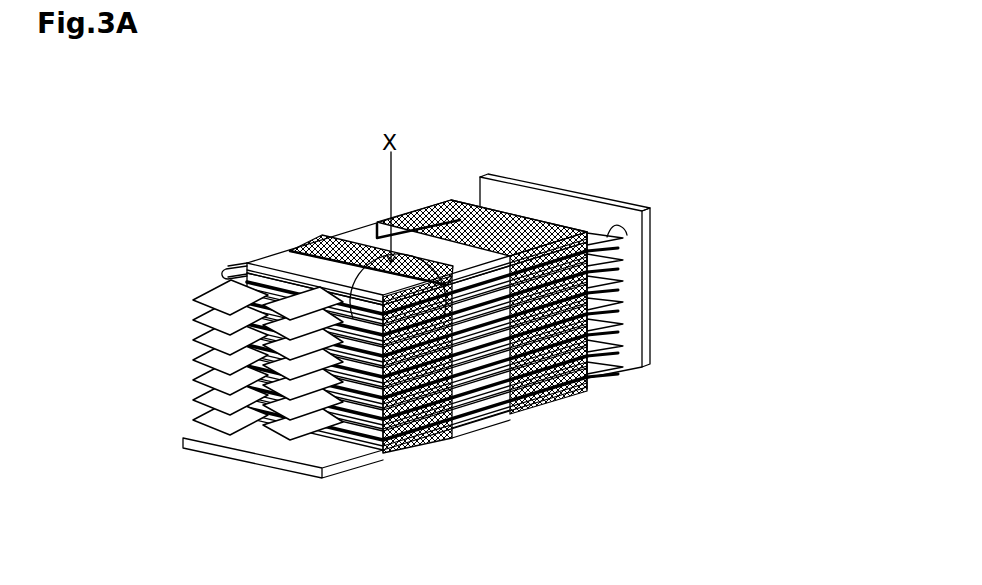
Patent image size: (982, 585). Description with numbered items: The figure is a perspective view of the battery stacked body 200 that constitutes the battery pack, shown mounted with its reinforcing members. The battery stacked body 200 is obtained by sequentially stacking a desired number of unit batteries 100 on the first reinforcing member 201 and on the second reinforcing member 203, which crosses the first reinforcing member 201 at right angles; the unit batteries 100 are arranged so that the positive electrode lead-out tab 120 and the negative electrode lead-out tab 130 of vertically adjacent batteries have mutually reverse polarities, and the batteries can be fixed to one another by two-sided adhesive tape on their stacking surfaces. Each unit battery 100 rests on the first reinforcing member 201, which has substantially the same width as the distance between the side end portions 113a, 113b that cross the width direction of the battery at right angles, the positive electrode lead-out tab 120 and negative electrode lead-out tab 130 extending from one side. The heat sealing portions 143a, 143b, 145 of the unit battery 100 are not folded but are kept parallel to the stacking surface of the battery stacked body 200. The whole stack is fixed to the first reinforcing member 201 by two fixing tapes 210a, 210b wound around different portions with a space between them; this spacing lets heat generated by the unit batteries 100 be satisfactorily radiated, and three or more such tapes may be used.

The unit battery 100 is at (545, 210).
The side end portion 113a is at (229, 262).
The side end portion 113b is at (621, 241).
The positive electrode lead-out tab 120 is at (230, 296).
The negative electrode lead-out tab 130 is at (232, 322).
The heat sealing portion 143a is at (626, 231).
The heat sealing portion 143b is at (244, 264).
The heat sealing portion 145 is at (594, 218).
The battery stacked body 200 is at (325, 216).
The first reinforcing member 201 is at (365, 455).
The second reinforcing member 203 is at (651, 325).
The fixing tape 210a is at (430, 442).
The fixing tape 210b is at (570, 403).